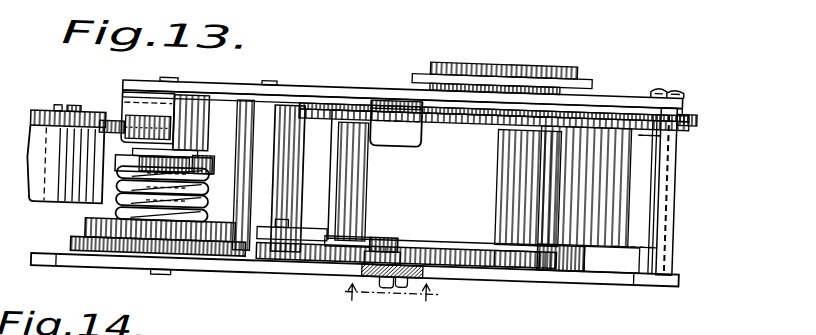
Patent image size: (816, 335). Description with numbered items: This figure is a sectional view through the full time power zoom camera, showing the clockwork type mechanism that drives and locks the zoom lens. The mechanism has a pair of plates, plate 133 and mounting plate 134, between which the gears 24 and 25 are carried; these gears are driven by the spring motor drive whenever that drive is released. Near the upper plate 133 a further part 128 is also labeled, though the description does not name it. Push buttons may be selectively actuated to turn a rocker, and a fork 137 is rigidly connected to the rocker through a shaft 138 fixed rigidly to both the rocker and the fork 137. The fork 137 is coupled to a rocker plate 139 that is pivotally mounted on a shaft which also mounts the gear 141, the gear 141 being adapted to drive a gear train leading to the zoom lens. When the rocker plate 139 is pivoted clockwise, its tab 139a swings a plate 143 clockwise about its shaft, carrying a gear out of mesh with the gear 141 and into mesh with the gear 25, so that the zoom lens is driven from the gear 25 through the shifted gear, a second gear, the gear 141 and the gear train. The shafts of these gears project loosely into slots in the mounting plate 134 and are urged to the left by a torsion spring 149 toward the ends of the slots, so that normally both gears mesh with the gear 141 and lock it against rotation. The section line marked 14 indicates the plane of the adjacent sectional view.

In FIG. 13, the plate 133 is at (652, 30).
In FIG. 13, the plate bar 128 is at (242, 63).
In FIG. 13, the shaft 138 is at (296, 134).
In FIG. 13, the fork 137 is at (384, 173).
In FIG. 13, the rocker plate 139 is at (352, 240).
In FIG. 13, the tab 139a is at (374, 238).
In FIG. 13, the plate 143 is at (404, 238).
In FIG. 13, the gear 141 is at (343, 256).
In FIG. 13, the gear 25 is at (531, 244).
In FIG. 13, the gear 24 is at (564, 236).
In FIG. 13, the mounting plate 134 is at (618, 264).
In FIG. 13, the section line 14- 14 is at (389, 302).
In FIG. 14, the torsion spring 149 is at (264, 334).